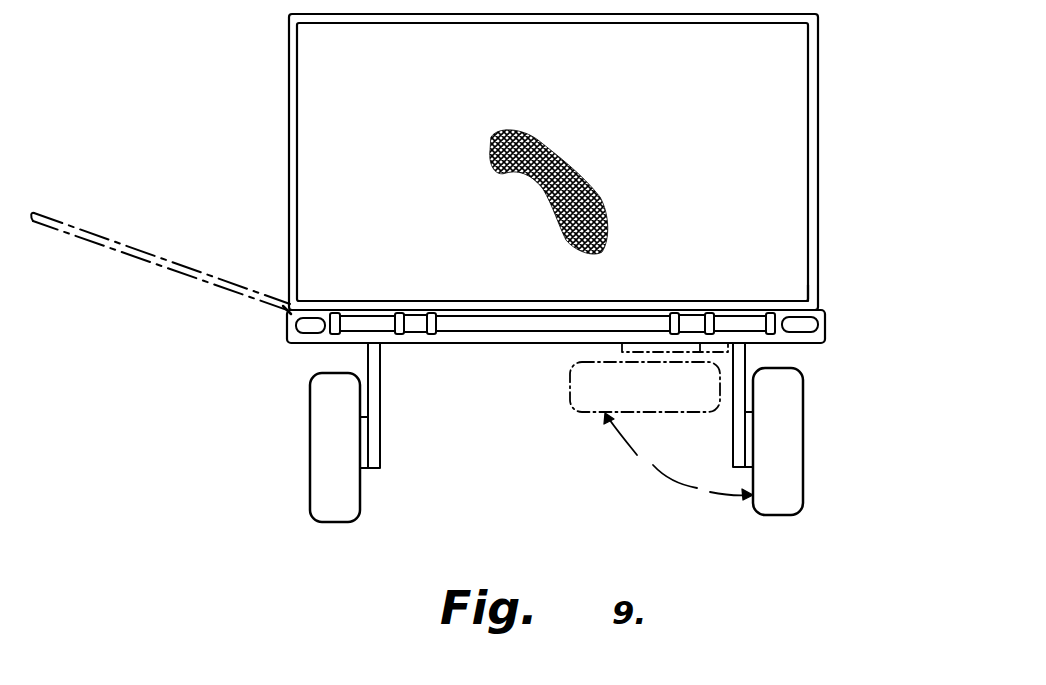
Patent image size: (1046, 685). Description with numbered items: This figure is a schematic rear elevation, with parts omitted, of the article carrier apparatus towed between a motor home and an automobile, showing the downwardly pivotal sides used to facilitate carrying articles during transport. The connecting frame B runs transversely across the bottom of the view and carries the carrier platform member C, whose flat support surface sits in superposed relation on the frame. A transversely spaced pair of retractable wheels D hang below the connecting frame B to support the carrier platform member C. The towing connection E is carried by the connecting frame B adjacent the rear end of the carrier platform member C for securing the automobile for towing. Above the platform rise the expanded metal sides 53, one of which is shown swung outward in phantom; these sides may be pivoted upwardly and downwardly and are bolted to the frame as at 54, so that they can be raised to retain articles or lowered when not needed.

The expanded metal sides 53 is at (790, 100).
The bolted connection to the frame 54 is at (286, 312).
The connecting frame B is at (505, 337).
The towing connection E is at (413, 314).
The carrier platform member C is at (770, 298).
The retractable wheels D is at (360, 492).